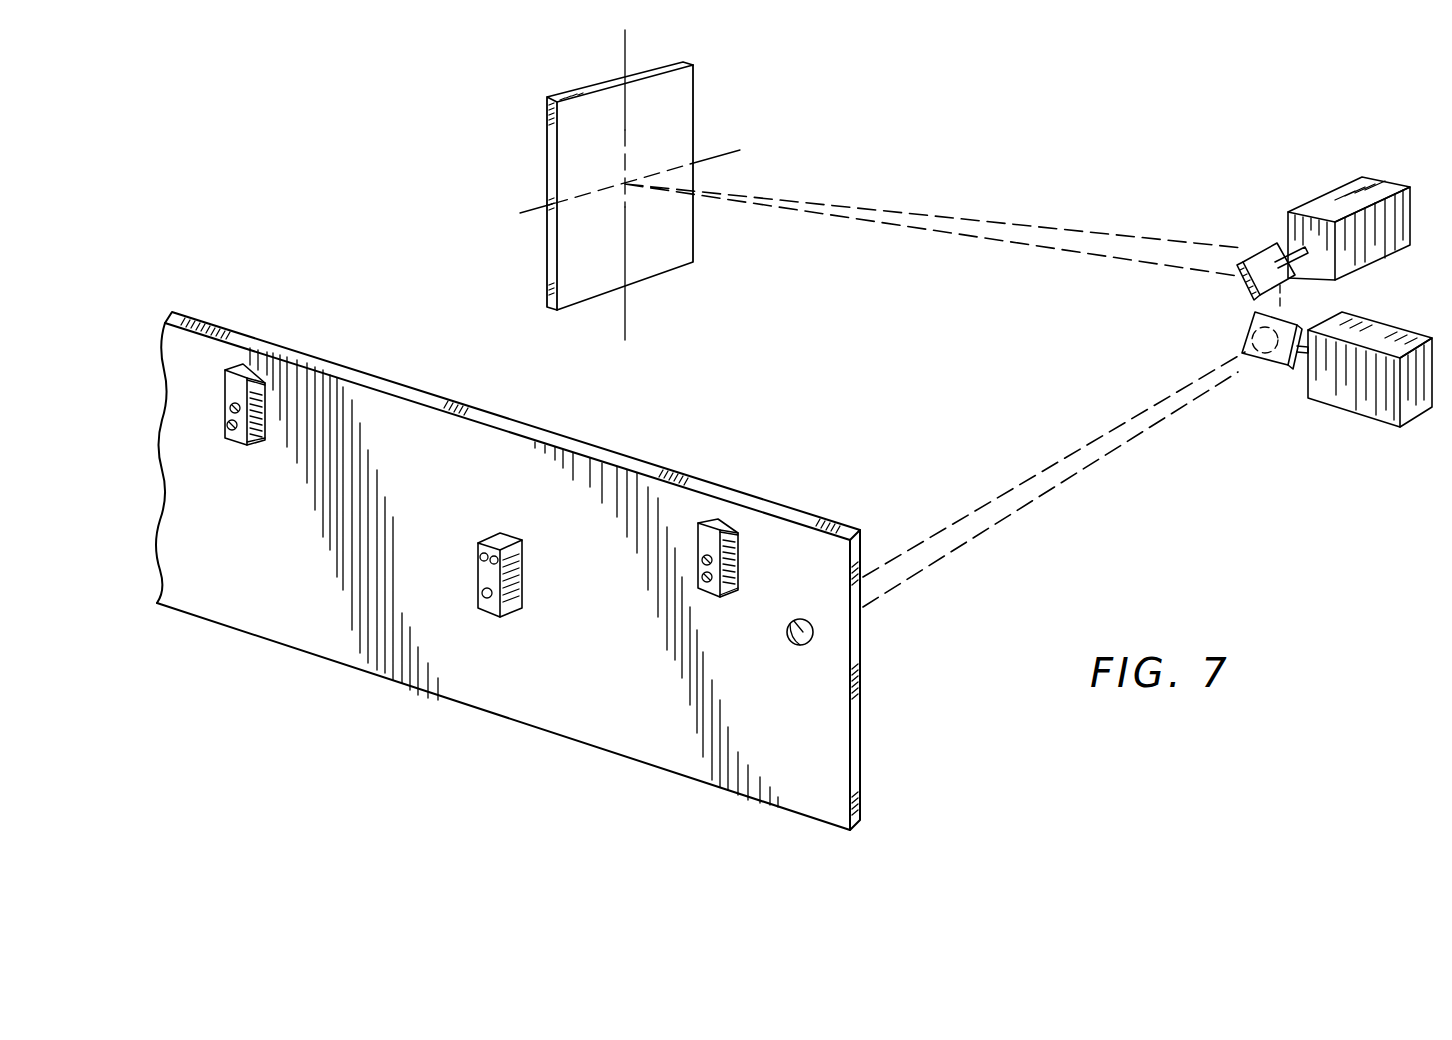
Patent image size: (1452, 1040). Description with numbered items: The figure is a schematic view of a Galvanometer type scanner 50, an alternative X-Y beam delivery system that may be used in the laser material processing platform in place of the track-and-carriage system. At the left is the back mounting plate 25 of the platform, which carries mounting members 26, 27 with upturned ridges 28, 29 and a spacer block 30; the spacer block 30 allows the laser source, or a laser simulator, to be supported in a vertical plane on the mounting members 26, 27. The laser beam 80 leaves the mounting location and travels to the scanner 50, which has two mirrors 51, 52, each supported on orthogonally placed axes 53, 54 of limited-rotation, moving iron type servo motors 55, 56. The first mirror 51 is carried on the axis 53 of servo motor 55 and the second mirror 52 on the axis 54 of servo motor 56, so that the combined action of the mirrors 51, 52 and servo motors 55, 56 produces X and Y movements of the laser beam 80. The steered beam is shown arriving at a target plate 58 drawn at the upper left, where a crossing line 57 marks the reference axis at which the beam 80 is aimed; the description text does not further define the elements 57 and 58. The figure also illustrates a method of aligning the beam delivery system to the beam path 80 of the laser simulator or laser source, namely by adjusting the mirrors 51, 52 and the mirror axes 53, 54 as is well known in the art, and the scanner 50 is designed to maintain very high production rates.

The back mounting plate 25 is at (267, 622).
The mounting member 26 is at (737, 568).
The mounting member 27 is at (267, 408).
The upturned ridge 28 is at (710, 530).
The upturned ridge 29 is at (240, 370).
The spacer block 30 is at (513, 557).
The Galvanometer type scanner 50 is at (933, 208).
The mirror 51 is at (1258, 263).
The mirror 52 is at (1277, 355).
The axis 53 is at (1290, 257).
The axis 54 is at (1298, 360).
The servo motor 55 is at (1368, 258).
The servo motor 56 is at (1422, 398).
The horizontal axis 57 is at (717, 153).
The target plate 58 is at (624, 60).
The laser beam 80 is at (1103, 447).